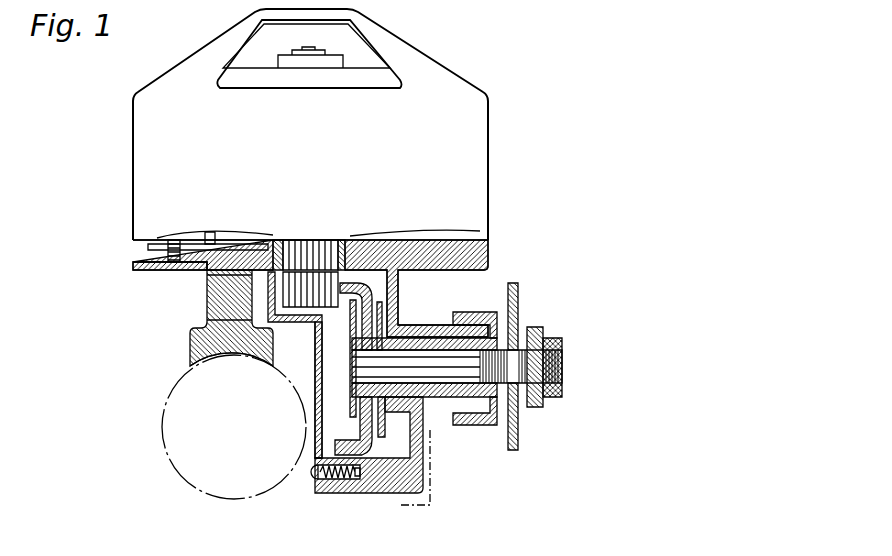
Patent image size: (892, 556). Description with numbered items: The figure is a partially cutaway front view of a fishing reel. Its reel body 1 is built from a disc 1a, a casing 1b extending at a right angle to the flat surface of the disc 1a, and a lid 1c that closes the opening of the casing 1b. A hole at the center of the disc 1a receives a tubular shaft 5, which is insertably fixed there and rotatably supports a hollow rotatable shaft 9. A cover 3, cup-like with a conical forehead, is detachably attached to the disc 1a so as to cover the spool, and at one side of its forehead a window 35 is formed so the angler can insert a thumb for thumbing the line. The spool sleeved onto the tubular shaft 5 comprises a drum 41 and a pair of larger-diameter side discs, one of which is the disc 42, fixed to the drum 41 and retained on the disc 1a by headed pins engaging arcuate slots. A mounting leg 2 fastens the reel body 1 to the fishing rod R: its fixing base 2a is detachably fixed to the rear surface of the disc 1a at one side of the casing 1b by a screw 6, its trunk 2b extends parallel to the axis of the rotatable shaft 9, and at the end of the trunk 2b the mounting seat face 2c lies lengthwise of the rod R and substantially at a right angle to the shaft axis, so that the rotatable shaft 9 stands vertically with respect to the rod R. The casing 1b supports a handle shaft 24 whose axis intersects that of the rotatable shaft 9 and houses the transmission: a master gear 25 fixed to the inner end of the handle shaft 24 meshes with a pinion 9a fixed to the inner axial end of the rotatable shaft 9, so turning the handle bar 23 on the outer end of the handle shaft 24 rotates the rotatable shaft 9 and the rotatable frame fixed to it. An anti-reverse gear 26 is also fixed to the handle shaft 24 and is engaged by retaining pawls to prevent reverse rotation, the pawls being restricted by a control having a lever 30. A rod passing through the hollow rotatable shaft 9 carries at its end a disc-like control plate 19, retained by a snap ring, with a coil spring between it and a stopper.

The reel body 1 is at (323, 495).
The disc 1a is at (428, 268).
The casing 1b is at (385, 450).
The lid 1c is at (316, 333).
The mounting leg 2 is at (207, 307).
The fixing base 2a is at (137, 265).
The trunk 2b is at (217, 287).
The mounting seat face 2c is at (222, 355).
The cover 3 is at (470, 142).
The tubular shaft 5 is at (338, 237).
The screw 6 is at (168, 270).
The rotatable shaft 9 is at (313, 240).
The pinion 9a is at (310, 285).
The control plate 19 is at (365, 80).
The handle bar 23 is at (535, 325).
The handle shaft 24 is at (493, 397).
The master gear 25 is at (312, 478).
The anti-reverse gear 26 is at (375, 475).
The lever 30 is at (432, 477).
The window 35 is at (380, 47).
The drum 41 is at (212, 232).
The disc 42 is at (193, 238).
The fishing rod R is at (165, 453).